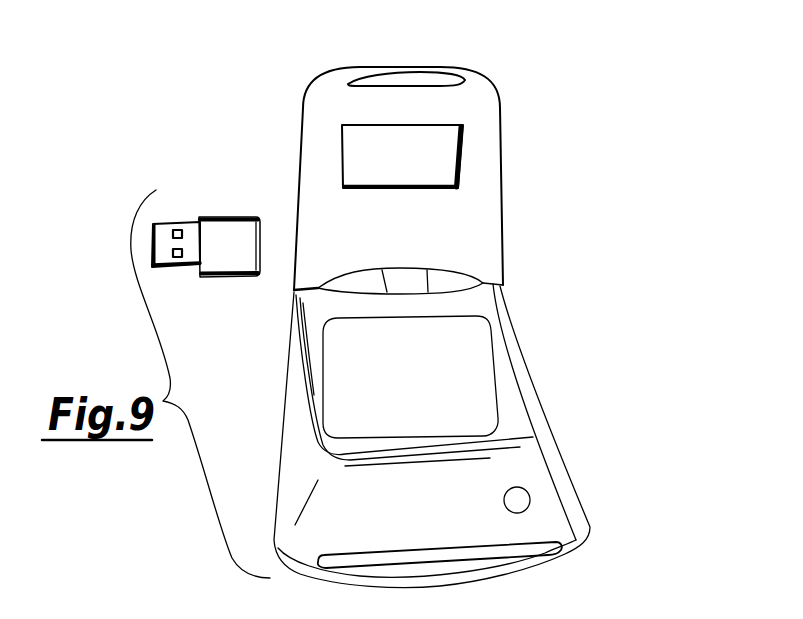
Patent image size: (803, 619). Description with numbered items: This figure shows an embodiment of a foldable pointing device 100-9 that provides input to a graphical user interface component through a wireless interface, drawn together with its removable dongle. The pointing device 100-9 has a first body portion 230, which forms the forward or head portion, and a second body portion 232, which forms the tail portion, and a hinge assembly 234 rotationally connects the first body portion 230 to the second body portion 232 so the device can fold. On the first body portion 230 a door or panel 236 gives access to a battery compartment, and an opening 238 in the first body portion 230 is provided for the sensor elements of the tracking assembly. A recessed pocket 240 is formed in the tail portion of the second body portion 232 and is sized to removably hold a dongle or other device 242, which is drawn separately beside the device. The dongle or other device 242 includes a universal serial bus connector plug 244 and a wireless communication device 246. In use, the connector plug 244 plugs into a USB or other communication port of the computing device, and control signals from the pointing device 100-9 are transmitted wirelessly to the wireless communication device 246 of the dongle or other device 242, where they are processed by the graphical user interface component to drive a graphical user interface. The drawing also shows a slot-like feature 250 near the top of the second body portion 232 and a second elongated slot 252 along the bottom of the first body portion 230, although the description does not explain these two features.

The pointing device 100-9 is at (588, 312).
The first body portion 230 is at (545, 428).
The second body portion 232 is at (563, 168).
The hinge assembly 234 is at (462, 270).
The door or panel 236 is at (420, 380).
The opening 238 is at (513, 502).
The recessed pocket 240 is at (463, 140).
The dongle or other device 242 is at (210, 170).
The USB port connector plug 244 is at (173, 222).
The wireless communication device 246 is at (228, 233).
The top slot 250 is at (425, 82).
The bottom slot 252 is at (512, 553).